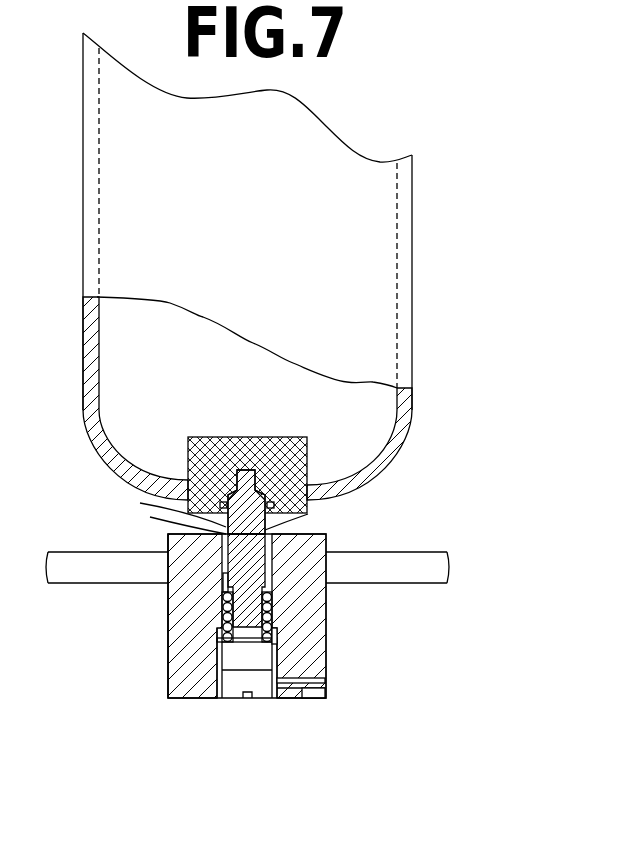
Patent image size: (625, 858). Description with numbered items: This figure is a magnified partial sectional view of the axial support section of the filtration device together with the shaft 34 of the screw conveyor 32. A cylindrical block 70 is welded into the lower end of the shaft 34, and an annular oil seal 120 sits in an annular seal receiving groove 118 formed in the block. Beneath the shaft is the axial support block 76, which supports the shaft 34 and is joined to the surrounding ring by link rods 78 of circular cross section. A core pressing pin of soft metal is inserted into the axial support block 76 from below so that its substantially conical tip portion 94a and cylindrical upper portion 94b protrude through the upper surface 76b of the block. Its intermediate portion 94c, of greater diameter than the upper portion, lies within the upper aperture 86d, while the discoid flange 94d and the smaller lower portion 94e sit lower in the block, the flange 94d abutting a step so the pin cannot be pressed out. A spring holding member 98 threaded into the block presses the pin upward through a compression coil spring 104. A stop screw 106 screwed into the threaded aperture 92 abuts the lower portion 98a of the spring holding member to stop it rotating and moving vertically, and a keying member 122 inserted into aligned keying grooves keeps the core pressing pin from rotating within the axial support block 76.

The screw conveyor 32 is at (416, 211).
The shaft 34 is at (412, 317).
The cylindrical block 70 is at (282, 431).
The annular oil seal 120 is at (193, 435).
The tip portion 94a is at (308, 465).
The seal receiving groove 118 is at (140, 503).
The upper portion 94b is at (150, 517).
The keying member 122 is at (308, 513).
The upper surface 76b is at (295, 530).
The upper aperture 86d is at (168, 553).
The intermediate portion 94c is at (224, 575).
The flange 94d is at (272, 586).
The lower portion 94e is at (217, 630).
The axial support block 76 is at (329, 627).
The link rods 78 is at (410, 570).
The compression coil spring 104 is at (274, 644).
The spring holding member 98 is at (237, 684).
The lower portion 98a is at (259, 694).
The stop screw 106 is at (315, 688).
The threaded aperture 92 is at (308, 690).